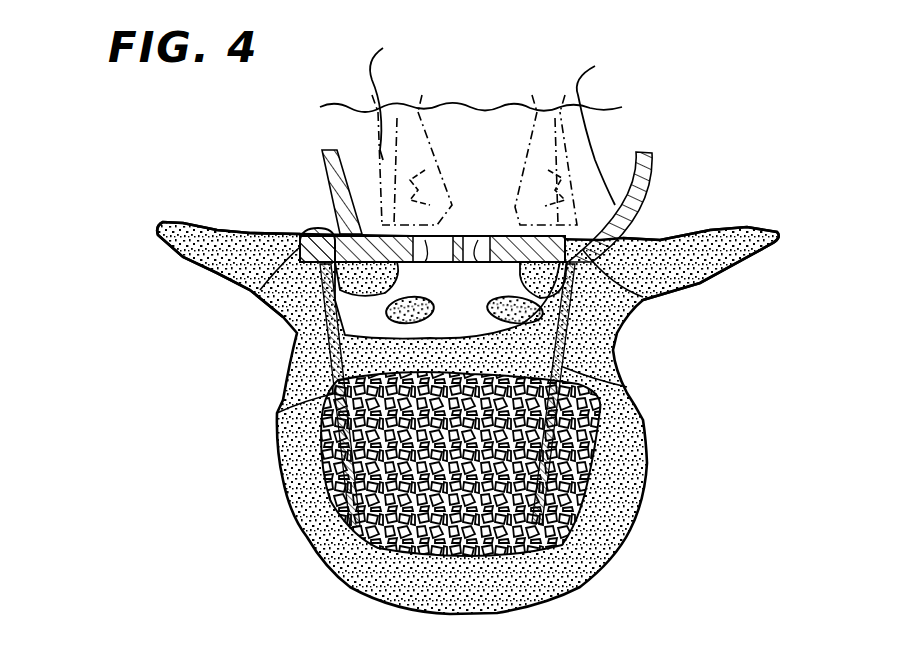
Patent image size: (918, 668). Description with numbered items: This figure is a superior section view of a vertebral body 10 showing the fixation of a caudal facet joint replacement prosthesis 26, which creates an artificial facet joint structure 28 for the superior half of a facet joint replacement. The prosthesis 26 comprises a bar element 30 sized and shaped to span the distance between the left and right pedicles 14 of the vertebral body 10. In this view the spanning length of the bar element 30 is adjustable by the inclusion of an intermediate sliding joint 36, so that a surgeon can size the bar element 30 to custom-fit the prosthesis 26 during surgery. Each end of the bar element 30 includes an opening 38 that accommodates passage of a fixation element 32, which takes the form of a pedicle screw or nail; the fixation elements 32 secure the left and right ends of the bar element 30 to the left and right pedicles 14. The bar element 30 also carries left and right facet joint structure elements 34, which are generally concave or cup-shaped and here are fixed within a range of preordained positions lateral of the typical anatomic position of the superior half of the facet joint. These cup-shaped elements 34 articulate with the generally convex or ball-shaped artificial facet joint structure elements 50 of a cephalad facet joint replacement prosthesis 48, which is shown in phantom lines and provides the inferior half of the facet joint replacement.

The vertebral body 10 is at (637, 497).
The pedicles 14 is at (292, 226).
The caudal facet joint replacement prosthesis 26 is at (473, 319).
The artificial facet joint structure 28 is at (500, 118).
The bar element 30 is at (433, 233).
The fixation element 32 is at (628, 382).
The facet joint structure element 34 is at (322, 165).
The intermediate sliding joint 36 is at (453, 262).
The opening 38 is at (258, 306).
The cephalad facet joint replacement prosthesis 48 is at (523, 120).
The artificial facet joint structure element 50 is at (410, 112).